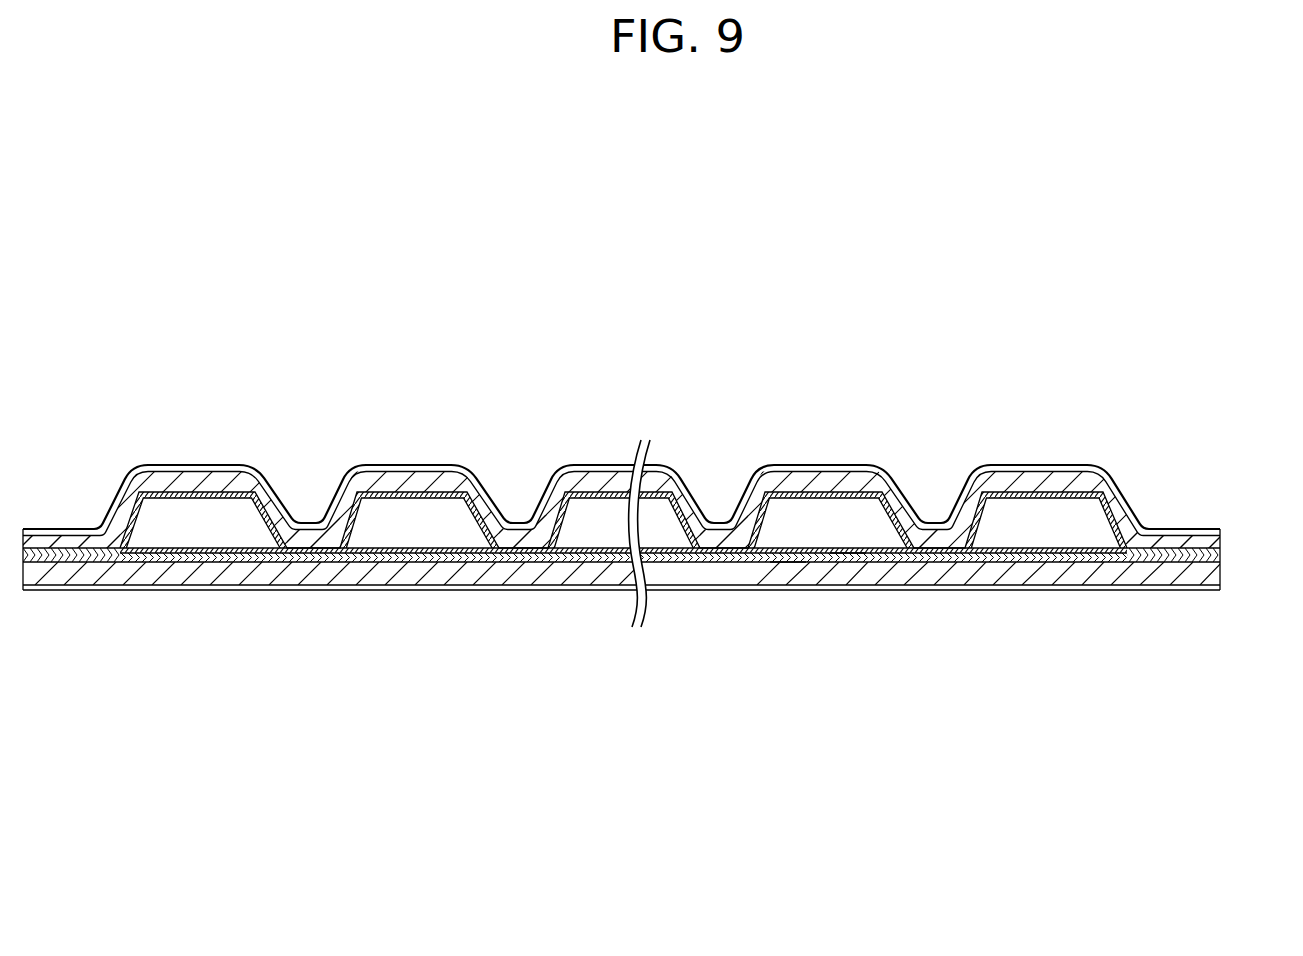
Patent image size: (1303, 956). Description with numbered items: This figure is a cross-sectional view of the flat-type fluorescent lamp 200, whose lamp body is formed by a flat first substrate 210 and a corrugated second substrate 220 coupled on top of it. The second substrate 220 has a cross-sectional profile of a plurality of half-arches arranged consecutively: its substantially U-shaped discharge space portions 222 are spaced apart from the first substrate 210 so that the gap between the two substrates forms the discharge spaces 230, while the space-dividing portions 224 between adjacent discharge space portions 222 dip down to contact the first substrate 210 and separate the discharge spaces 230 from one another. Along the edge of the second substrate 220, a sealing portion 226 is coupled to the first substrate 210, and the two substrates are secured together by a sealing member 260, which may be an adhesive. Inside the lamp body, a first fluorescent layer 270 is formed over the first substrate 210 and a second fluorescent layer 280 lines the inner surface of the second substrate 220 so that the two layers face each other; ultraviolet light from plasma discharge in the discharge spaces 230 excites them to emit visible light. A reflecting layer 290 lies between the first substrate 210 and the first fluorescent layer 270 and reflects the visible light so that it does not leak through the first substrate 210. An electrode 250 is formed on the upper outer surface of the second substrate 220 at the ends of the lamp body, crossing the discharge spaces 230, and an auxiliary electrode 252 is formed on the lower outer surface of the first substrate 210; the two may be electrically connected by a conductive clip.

The flat-type fluorescent lamp 200 is at (615, 343).
The first substrate 210 is at (1221, 575).
The second substrate 220 is at (1222, 540).
The discharge space portions 222 is at (1003, 493).
The space-dividing portions 224 is at (933, 537).
The sealing portion 226 is at (1169, 547).
The discharge spaces 230 is at (823, 518).
The electrode 250 is at (1221, 531).
The auxiliary electrode 252 is at (1221, 590).
The sealing member 260 is at (1172, 560).
The first fluorescent layer 270 is at (787, 558).
The second fluorescent layer 280 is at (862, 494).
The reflecting layer 290 is at (847, 554).